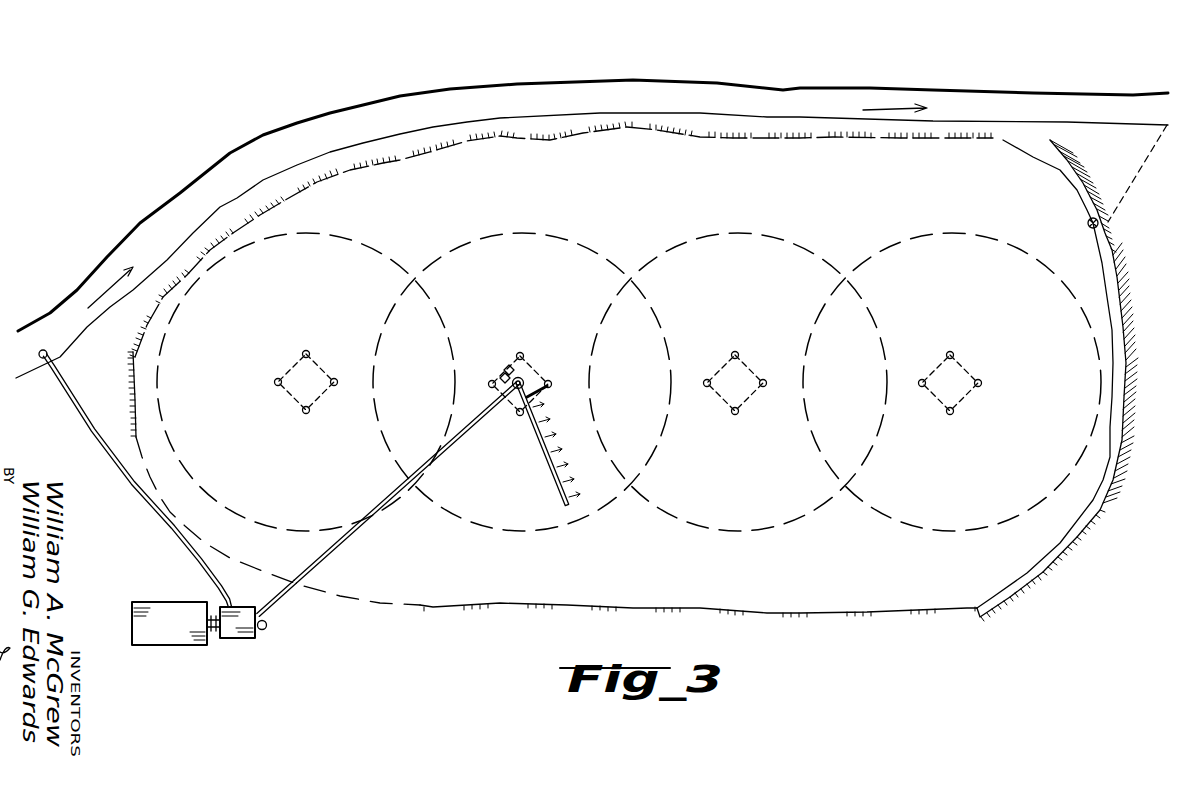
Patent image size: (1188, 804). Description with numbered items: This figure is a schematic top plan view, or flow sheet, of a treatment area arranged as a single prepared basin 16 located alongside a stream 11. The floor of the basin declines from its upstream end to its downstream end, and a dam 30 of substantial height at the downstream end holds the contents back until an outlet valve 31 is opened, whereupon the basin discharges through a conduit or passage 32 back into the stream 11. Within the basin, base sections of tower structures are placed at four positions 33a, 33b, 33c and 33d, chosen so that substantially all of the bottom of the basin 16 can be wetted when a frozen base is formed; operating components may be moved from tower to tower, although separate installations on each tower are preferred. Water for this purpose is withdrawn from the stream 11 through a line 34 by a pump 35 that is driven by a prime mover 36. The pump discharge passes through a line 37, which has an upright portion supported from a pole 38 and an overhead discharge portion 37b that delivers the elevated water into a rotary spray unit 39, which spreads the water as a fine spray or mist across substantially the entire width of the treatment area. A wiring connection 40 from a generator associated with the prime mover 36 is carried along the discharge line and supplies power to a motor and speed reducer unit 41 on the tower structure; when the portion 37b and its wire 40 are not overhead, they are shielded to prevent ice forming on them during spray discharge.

The stream 11 is at (650, 107).
The prepared basin 16 is at (88, 412).
The dam 30 is at (1108, 447).
The outlet valve 31 is at (1087, 222).
The conduit or passage 32 is at (1133, 180).
The tower position 33a is at (313, 352).
The tower position 33b is at (530, 352).
The tower position 33c is at (747, 362).
The tower position 33d is at (967, 367).
The line 34 is at (100, 438).
The pump 35 is at (237, 643).
The prime mover 36 is at (165, 632).
The line 37 is at (267, 620).
The overhead discharge portion 37b is at (440, 457).
The pole 38 is at (265, 630).
The rotary spray unit 39 is at (550, 463).
The wiring connection 40 is at (500, 393).
The motor and speed reducer unit 41 is at (507, 366).